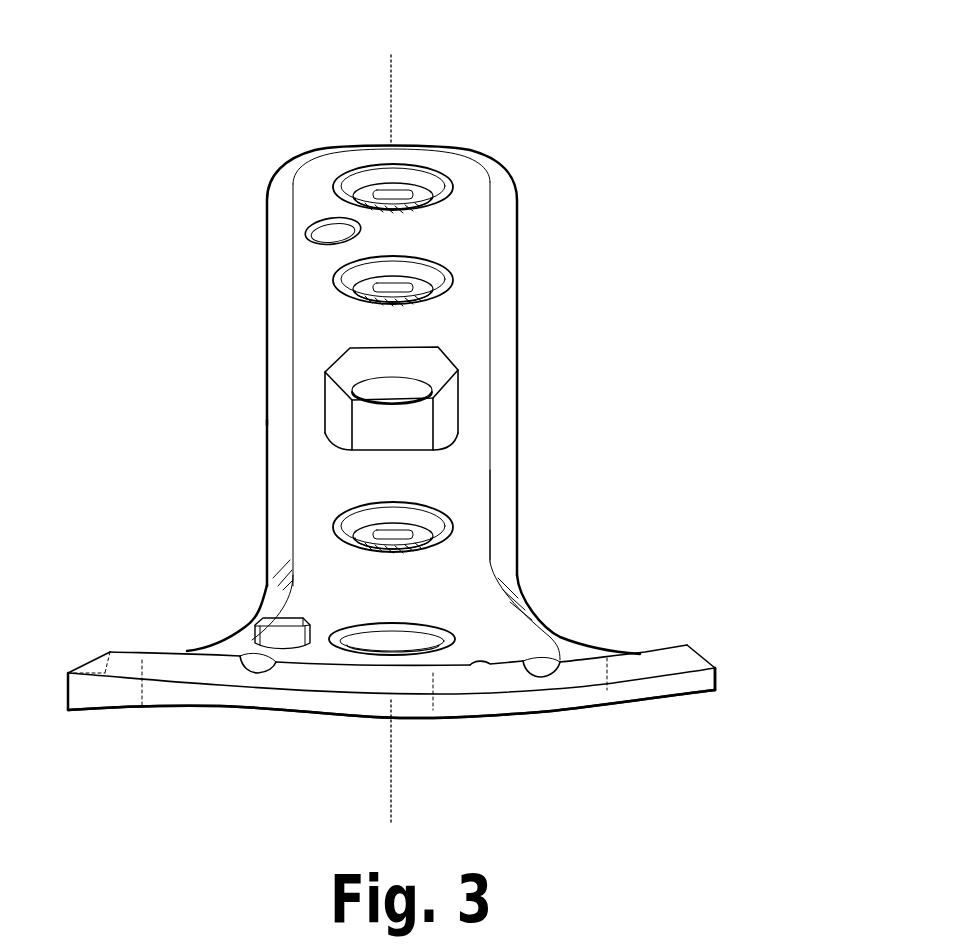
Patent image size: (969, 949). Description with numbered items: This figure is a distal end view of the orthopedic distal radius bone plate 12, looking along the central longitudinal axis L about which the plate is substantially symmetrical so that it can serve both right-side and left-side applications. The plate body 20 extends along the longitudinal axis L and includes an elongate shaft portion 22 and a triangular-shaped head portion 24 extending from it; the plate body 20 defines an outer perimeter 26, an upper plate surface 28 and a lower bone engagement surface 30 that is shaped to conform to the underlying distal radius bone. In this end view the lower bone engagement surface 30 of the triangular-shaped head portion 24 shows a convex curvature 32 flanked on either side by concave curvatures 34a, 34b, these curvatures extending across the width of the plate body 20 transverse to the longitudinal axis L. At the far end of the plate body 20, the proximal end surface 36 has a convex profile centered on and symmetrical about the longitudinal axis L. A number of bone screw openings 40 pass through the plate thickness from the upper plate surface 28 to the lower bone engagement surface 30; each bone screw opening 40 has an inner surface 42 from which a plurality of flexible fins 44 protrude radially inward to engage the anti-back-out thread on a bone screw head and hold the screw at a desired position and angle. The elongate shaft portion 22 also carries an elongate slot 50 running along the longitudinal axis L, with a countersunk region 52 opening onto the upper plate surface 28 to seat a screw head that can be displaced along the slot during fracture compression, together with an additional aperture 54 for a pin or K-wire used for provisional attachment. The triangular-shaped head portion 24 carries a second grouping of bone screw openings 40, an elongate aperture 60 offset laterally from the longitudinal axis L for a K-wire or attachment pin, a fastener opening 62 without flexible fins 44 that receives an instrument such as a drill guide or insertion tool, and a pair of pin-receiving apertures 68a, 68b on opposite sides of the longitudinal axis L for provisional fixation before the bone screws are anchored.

The central longitudinal axis L is at (392, 70).
The bone plate 12 is at (583, 120).
The plate body 20 is at (580, 353).
The elongate shaft portion 22 is at (535, 270).
The triangular-shaped head portion 24 is at (670, 613).
The outer perimeter 26 is at (267, 420).
The upper plate surface 28 is at (445, 558).
The lower bone engagement surface 30 is at (308, 716).
The convex curvature 32 is at (455, 720).
The concave curvature 34a is at (148, 708).
The concave curvature 34b is at (641, 708).
The proximal end surface 36 is at (410, 140).
The bone screw openings 40 is at (335, 282).
The inner surface 42 is at (418, 170).
The flexible fins 44 is at (383, 185).
The elongate slot 50 is at (323, 394).
The countersunk region 52 is at (395, 358).
The additional aperture 54 is at (332, 232).
The elongate aperture 60 is at (255, 626).
The fastener opening 62 is at (358, 626).
The pin-receiving aperture 68a is at (550, 665).
The pin-receiving aperture 68b is at (230, 658).